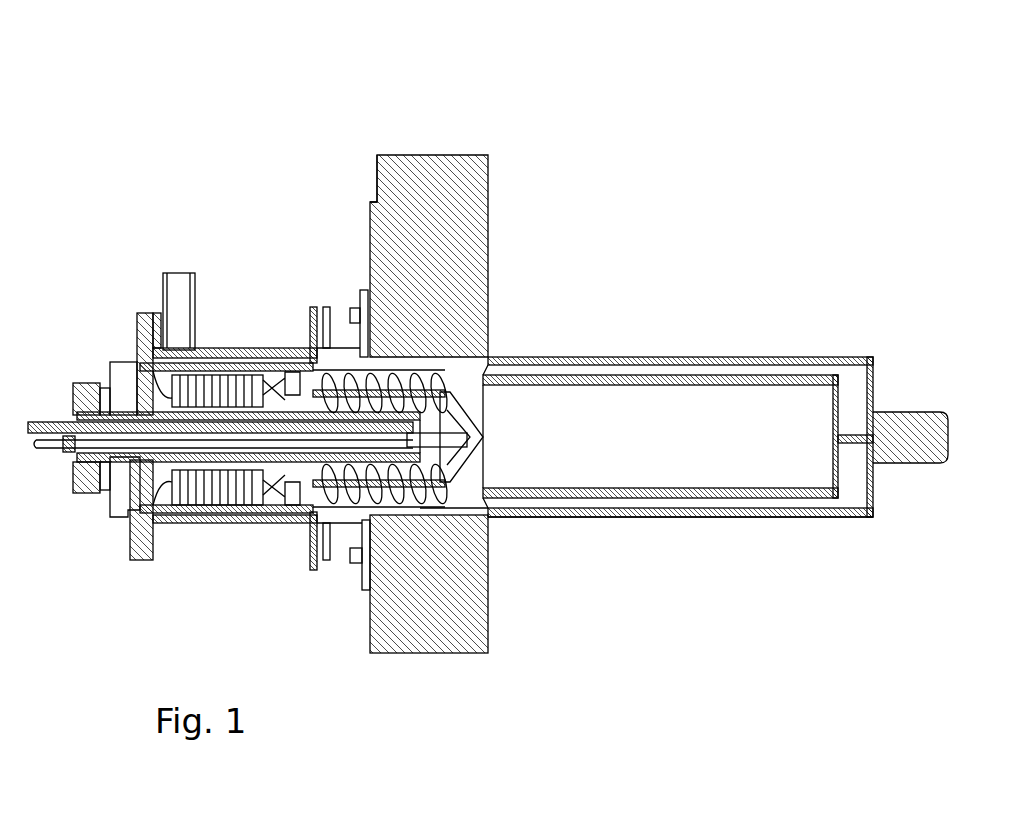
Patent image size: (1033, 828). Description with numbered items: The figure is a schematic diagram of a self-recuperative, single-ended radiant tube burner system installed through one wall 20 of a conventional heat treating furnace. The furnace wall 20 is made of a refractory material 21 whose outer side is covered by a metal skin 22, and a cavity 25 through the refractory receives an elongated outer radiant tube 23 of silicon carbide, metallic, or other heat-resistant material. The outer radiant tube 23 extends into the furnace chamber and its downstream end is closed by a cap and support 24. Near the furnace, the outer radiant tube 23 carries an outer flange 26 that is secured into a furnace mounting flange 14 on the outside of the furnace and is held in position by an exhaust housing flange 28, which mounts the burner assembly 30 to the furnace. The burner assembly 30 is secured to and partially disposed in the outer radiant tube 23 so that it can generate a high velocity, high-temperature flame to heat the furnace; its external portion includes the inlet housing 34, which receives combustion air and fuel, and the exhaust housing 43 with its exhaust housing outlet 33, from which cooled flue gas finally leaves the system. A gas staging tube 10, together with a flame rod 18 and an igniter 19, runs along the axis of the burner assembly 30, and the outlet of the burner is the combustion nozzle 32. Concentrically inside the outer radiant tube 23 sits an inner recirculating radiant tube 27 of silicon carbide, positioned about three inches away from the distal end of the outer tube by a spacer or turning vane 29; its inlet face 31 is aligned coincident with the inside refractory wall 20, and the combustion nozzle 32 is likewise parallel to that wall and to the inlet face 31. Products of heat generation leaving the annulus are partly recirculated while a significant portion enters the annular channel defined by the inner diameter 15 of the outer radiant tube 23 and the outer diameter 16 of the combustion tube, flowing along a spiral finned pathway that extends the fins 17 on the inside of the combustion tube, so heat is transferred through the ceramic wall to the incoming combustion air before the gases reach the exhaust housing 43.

The gas staging tube 10 is at (462, 417).
The furnace mounting flange 14 is at (347, 568).
The inner diameter of the outer radiant tube 15 is at (440, 533).
The outer diameter of the combustion tube 16 is at (413, 493).
The fins 17 is at (431, 489).
The flame rod 18 is at (48, 456).
The igniter 19 is at (47, 419).
The furnace wall 20 is at (491, 214).
The refractory material 21 is at (437, 215).
The metal skin 22 is at (368, 202).
The outer radiant tube 23 is at (845, 356).
The outer radiant tube cap 24 is at (877, 394).
The cavity 25 is at (494, 527).
The outer flange 26 is at (315, 570).
The inner radiant tube 27 is at (655, 374).
The exhaust housing flange 28 is at (308, 305).
The spacer 29 is at (838, 501).
The burner assembly 30 is at (150, 563).
The inlet face 31 is at (493, 368).
The combustion nozzle 32 is at (466, 486).
The exhaust housing outlet 33 is at (178, 271).
The inlet housing 34 is at (78, 382).
The exhaust housing 43 is at (228, 346).